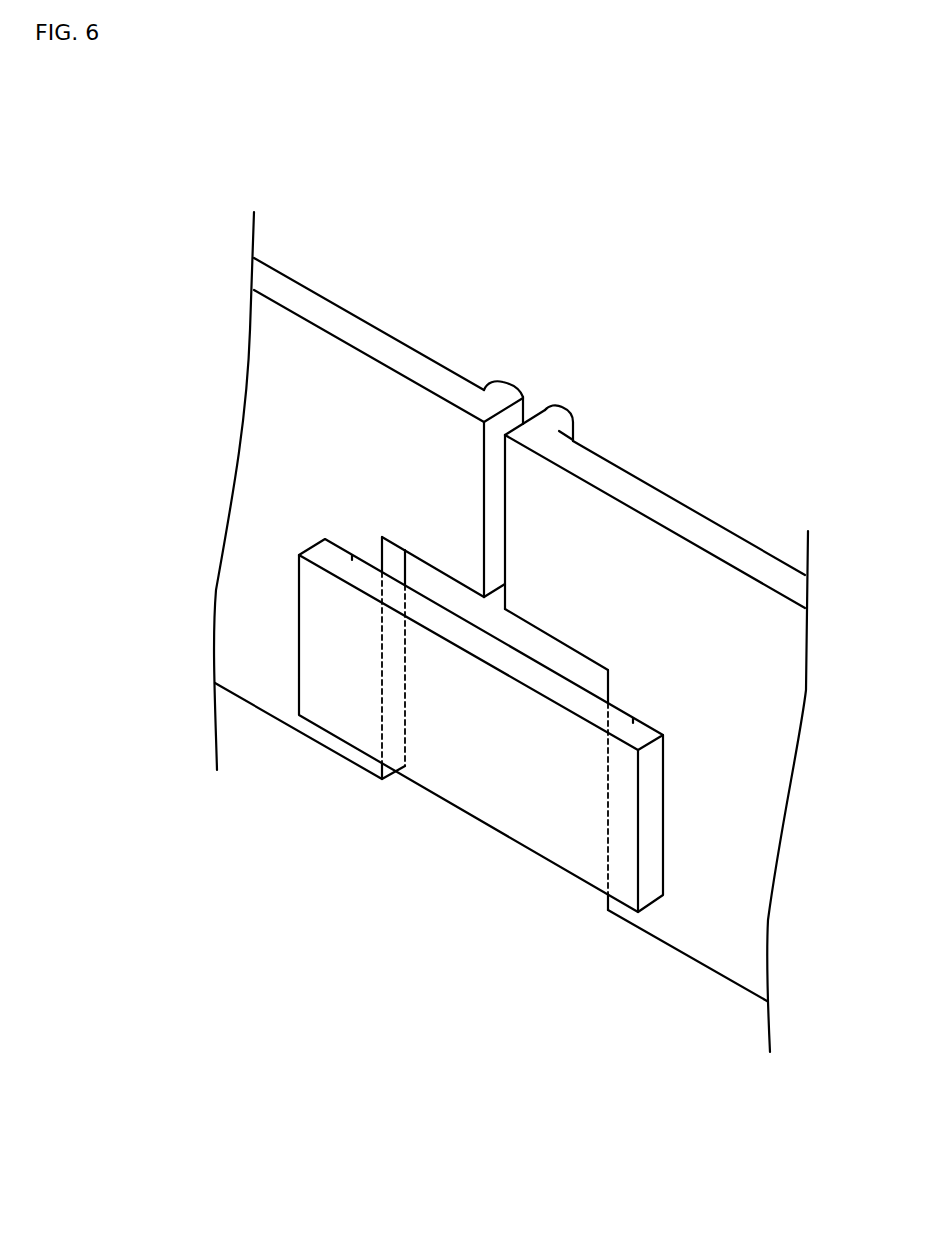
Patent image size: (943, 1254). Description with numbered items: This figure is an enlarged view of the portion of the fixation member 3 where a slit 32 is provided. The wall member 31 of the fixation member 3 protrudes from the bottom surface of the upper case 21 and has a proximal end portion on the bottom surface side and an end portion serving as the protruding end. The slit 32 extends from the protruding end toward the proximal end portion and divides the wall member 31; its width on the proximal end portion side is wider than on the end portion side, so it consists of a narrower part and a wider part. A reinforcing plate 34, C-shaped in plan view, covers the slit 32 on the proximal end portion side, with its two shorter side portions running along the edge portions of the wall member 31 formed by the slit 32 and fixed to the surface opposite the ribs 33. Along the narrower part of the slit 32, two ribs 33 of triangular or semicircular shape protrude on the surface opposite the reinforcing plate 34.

The fixation member 3 is at (529, 521).
The upper case 21 is at (338, 819).
The wall member 31 is at (402, 362).
The slit 32 is at (521, 595).
The rib 33 is at (508, 386).
The reinforcing plate 34 is at (540, 827).